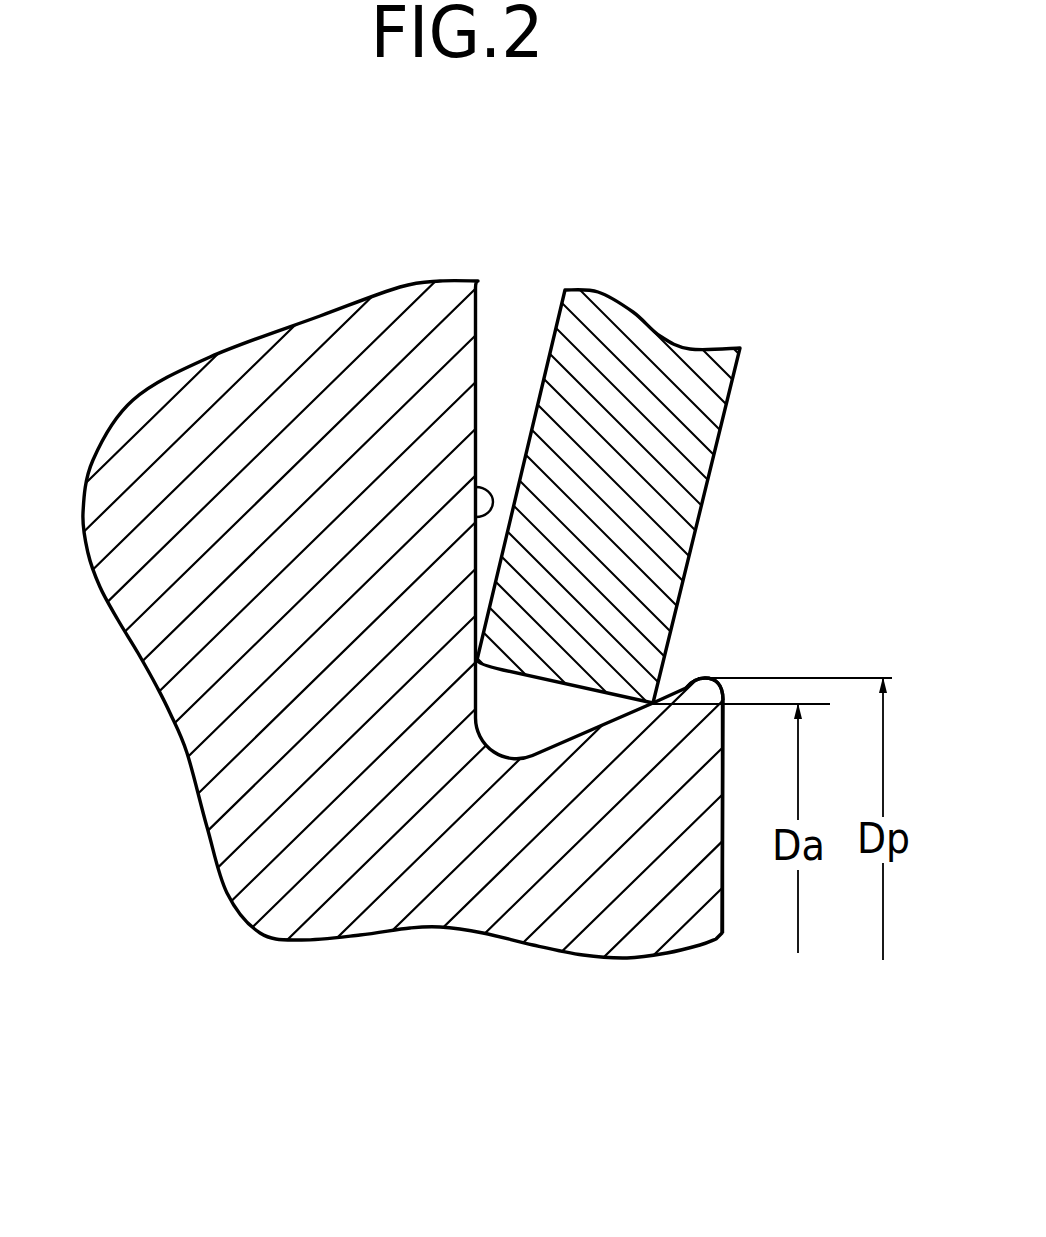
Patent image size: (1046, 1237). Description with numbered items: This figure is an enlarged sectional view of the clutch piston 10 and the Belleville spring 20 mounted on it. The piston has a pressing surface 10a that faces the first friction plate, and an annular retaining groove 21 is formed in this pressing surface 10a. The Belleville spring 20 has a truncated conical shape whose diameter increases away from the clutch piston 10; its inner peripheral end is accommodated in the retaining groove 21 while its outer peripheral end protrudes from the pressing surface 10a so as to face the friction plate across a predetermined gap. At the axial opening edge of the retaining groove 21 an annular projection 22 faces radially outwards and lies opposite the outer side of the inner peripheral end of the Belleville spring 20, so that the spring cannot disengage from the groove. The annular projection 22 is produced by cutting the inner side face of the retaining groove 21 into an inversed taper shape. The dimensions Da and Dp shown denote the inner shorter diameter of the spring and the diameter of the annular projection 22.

The clutch piston 10 is at (278, 363).
The pressing surface 10a is at (723, 903).
The Belleville spring 20 is at (683, 457).
The annular retaining groove 21 is at (482, 517).
The annular projection 22 is at (701, 677).